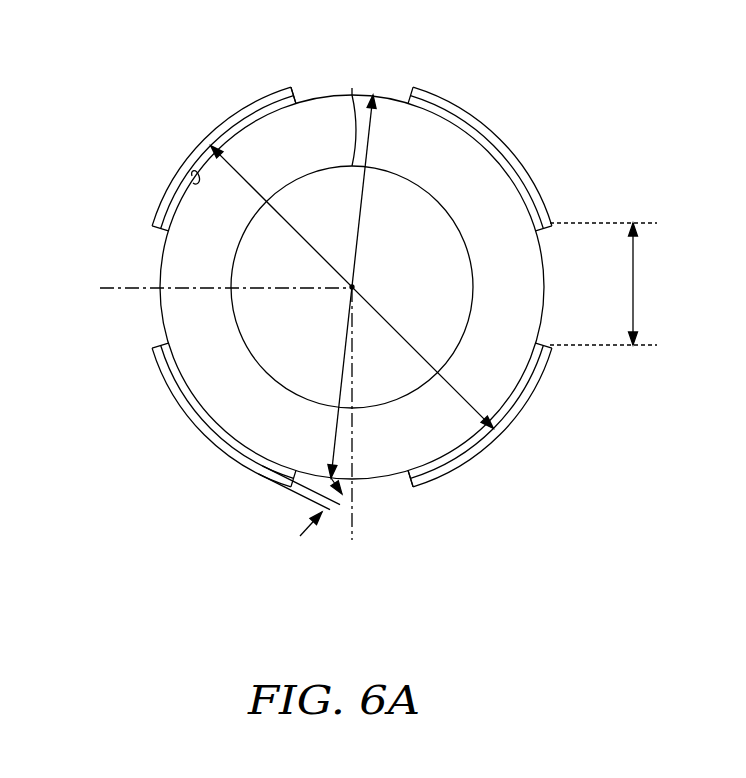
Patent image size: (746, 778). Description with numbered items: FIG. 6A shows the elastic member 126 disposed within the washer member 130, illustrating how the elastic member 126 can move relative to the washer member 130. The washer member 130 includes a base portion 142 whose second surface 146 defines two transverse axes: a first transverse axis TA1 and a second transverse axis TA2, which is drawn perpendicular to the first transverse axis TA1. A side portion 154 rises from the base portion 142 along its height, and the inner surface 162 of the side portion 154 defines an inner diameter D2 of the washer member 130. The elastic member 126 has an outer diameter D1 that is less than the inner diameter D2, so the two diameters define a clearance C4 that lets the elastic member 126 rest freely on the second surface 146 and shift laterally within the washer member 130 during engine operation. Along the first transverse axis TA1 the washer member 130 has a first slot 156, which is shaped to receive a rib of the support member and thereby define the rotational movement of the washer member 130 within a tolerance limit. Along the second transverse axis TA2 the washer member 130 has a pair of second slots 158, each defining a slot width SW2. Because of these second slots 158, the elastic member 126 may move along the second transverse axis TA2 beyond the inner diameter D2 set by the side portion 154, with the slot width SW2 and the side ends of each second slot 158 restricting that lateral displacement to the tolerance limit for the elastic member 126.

The elastic member 126 is at (258, 360).
The washer member 130 is at (503, 134).
The base portion 142 is at (357, 88).
The second surface 146 is at (300, 90).
The side portion 154 is at (218, 128).
The first slot 156 is at (405, 482).
The second slot 158 is at (550, 226).
The inner surface 162 is at (192, 176).
The outer diameter D1 is at (360, 232).
The inner diameter D2 is at (289, 236).
The slot width SW2 is at (637, 284).
The first transverse axis TA1 is at (355, 530).
The second transverse axis TA2 is at (113, 290).
The clearance C4 is at (300, 536).